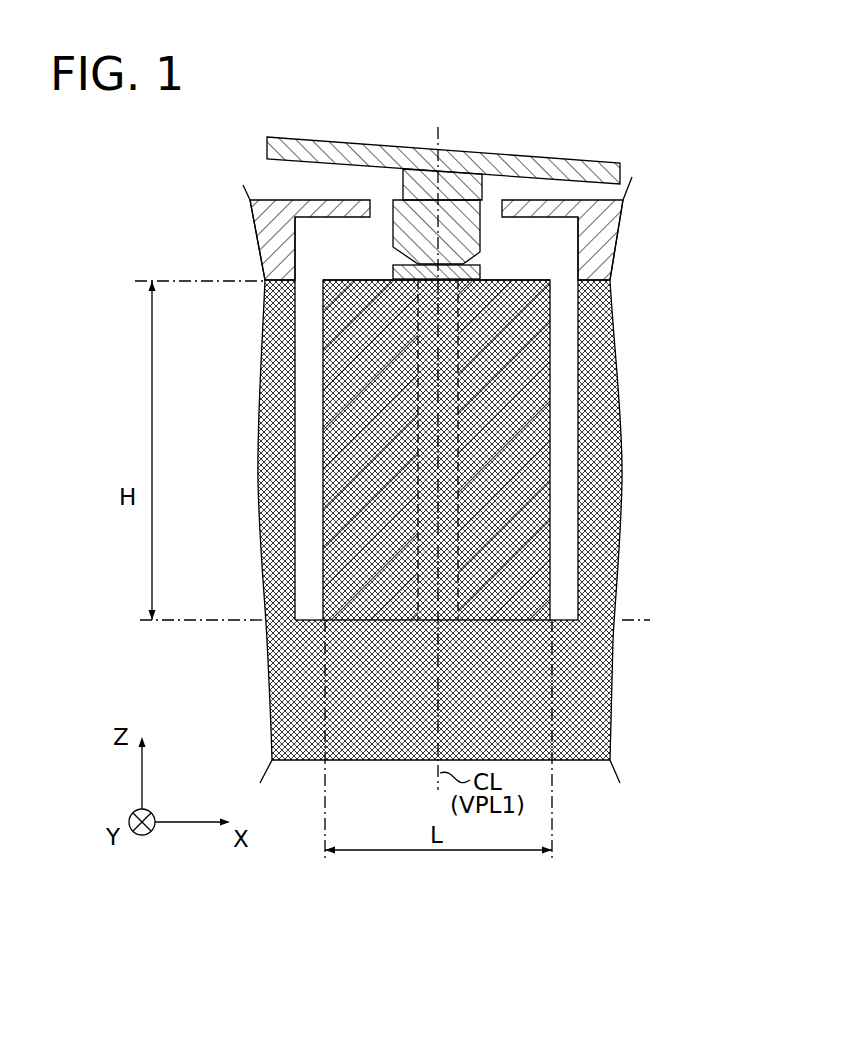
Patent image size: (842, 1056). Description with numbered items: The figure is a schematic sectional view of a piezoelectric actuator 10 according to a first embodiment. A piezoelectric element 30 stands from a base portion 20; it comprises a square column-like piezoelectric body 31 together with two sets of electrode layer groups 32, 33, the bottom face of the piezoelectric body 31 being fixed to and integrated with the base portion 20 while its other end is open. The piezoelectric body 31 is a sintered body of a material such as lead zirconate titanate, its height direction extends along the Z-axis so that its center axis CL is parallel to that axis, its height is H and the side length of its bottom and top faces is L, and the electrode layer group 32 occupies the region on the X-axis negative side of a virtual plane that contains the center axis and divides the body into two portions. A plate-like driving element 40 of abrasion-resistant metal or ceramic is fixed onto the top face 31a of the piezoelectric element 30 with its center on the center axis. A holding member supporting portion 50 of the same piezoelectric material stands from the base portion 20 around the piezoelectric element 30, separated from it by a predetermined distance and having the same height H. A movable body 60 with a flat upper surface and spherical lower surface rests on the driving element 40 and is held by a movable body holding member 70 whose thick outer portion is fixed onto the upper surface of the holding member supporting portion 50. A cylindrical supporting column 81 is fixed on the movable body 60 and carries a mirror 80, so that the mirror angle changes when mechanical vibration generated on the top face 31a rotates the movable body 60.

The piezoelectric actuator 10 is at (648, 88).
The base portion 20 is at (577, 705).
The piezoelectric element 30 is at (446, 434).
The piezoelectric body 31 is at (553, 343).
The top face 31a is at (395, 279).
The electrode layer group 32 is at (323, 508).
The electrode layer group 33 is at (553, 510).
The driving element 40 is at (482, 266).
The holding member supporting portion 50 is at (275, 337).
The movable body 60 is at (395, 218).
The movable body holding member 70 is at (614, 221).
The mirror 80 is at (538, 156).
The supporting column 81 is at (403, 177).